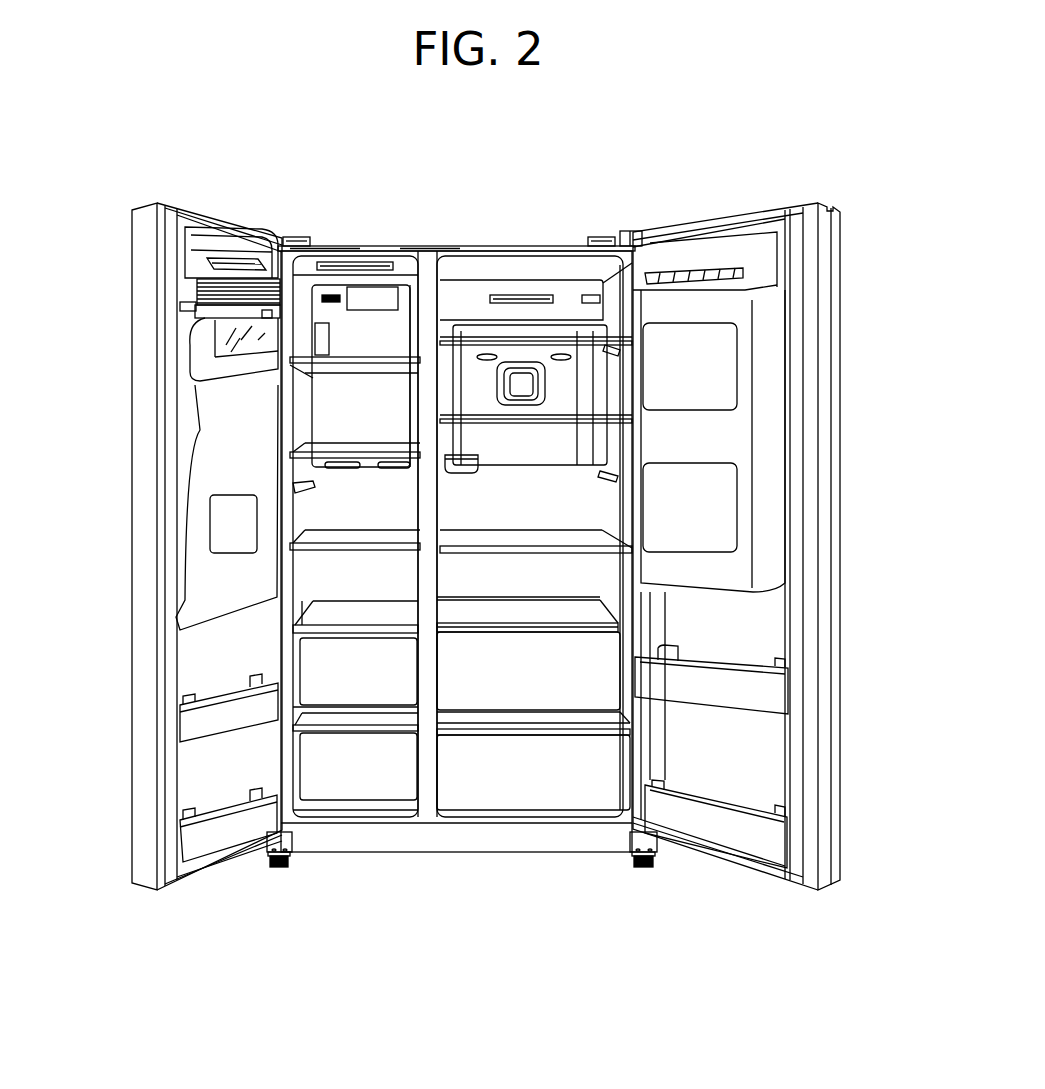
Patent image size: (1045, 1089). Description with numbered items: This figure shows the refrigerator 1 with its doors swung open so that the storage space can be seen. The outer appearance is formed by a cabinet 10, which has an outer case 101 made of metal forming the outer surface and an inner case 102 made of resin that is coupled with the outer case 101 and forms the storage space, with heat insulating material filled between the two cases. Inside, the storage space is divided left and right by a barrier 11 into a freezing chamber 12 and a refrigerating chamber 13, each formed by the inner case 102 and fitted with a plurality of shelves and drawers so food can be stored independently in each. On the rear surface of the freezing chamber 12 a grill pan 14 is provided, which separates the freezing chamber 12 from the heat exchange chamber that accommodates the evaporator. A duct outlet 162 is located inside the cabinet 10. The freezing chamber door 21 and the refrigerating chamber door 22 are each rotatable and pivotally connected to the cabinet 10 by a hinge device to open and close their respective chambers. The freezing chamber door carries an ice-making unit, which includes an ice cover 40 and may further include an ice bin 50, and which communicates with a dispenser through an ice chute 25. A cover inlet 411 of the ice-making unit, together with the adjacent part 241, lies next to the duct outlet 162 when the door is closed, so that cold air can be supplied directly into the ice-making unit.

The refrigerator 1 is at (582, 160).
The cabinet 10 is at (396, 231).
The outer case 101 is at (322, 244).
The inner case 102 is at (425, 252).
The barrier 11 is at (425, 797).
The freezing chamber 12 is at (352, 520).
The refrigerating chamber 13 is at (507, 520).
The grill pan 14 is at (414, 318).
The duct outlet 162 is at (362, 262).
The freezing chamber door 21 is at (122, 855).
The refrigerating chamber door 22 is at (852, 850).
The ice chute 25 is at (200, 477).
The ice cover 40 is at (176, 283).
The cover inlet 411 is at (245, 258).
The ice duct 241 is at (178, 306).
The ice bin 50 is at (176, 391).